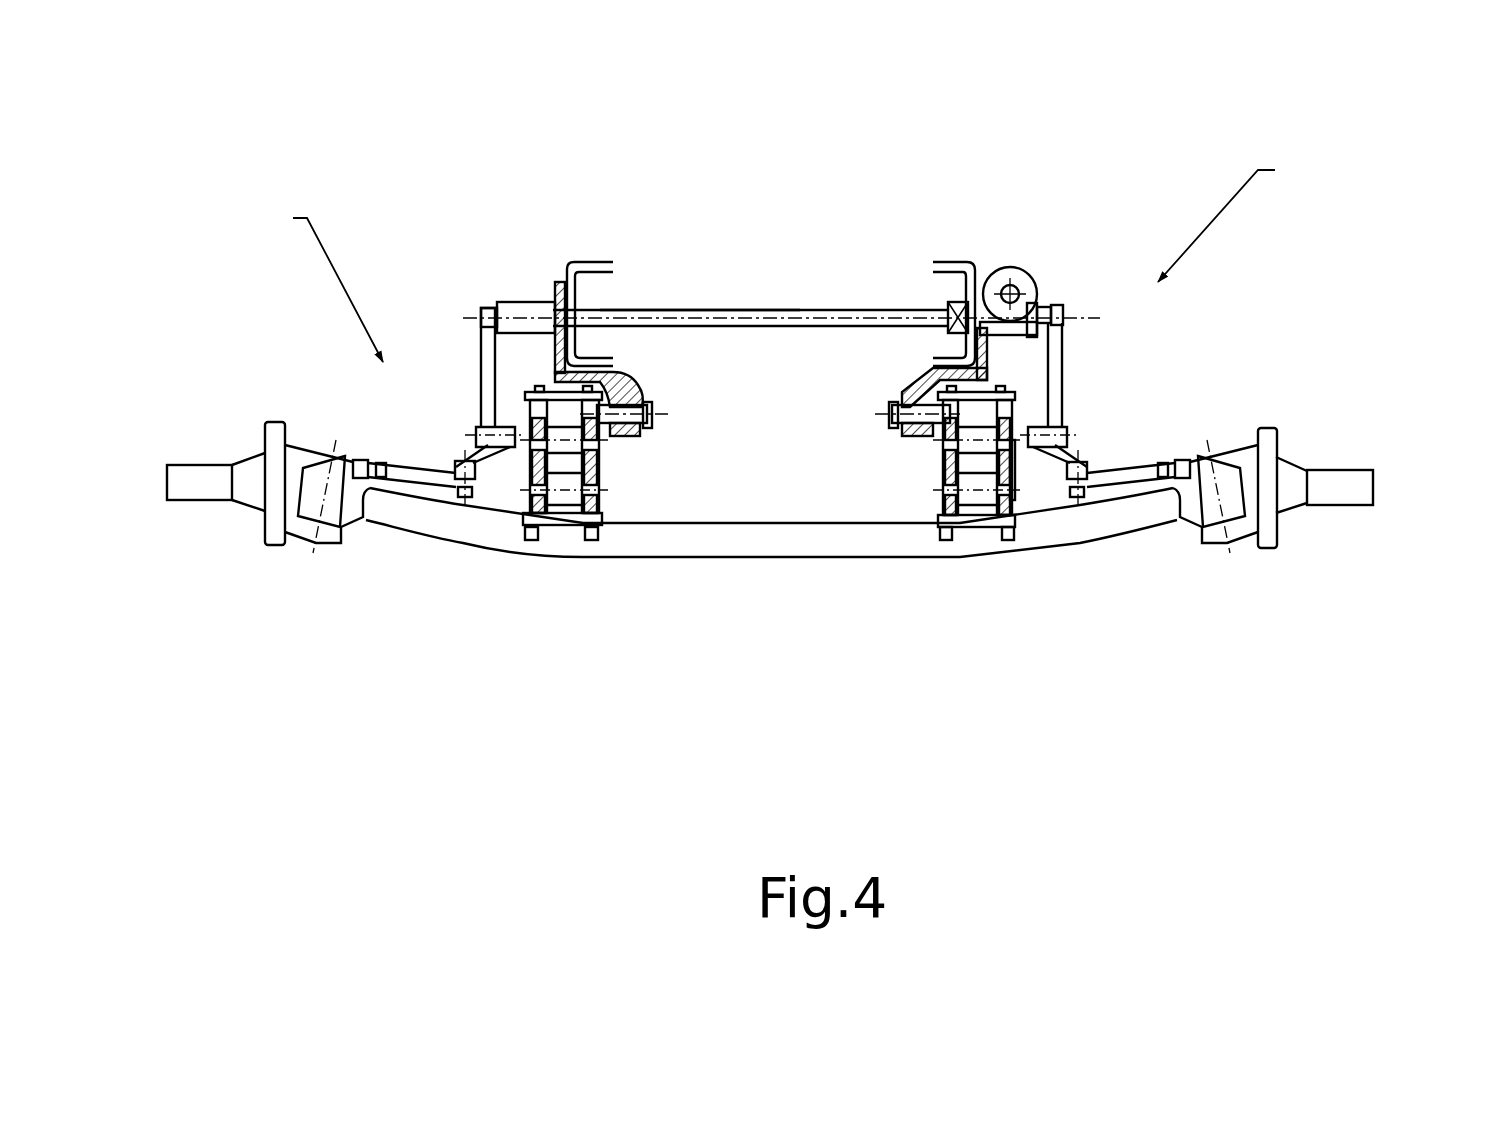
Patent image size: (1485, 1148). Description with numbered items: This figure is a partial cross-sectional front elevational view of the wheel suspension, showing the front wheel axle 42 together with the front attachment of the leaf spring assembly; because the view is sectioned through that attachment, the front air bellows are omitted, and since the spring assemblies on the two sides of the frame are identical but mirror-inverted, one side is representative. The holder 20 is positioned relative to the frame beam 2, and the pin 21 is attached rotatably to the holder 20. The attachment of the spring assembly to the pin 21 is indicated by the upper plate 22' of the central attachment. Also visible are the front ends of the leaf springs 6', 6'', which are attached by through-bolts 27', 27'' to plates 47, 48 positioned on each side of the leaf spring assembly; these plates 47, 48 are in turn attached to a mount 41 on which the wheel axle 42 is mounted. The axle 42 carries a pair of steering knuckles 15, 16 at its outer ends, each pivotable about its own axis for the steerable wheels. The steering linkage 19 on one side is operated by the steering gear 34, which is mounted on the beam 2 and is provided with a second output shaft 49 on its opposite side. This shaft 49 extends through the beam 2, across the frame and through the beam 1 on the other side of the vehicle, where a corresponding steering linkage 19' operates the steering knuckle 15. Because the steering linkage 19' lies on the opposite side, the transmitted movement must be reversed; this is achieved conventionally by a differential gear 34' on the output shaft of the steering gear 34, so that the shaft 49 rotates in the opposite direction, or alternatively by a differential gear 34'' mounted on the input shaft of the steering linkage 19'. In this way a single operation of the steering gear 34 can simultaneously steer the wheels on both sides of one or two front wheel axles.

The beam 1 is at (590, 264).
The beam 2 is at (972, 300).
The leaf spring 6' is at (1143, 302).
The leaf spring 6'' is at (1205, 358).
The steering knuckle 15 is at (218, 474).
The steering knuckle 16 is at (1318, 482).
The steering linkage 19 is at (1236, 217).
The steering linkage 19' is at (312, 282).
The holder 20 is at (915, 370).
The pin 21 is at (812, 310).
The upper plate 22' is at (1119, 250).
The through-bolt 27' is at (855, 551).
The through-bolt 27'' is at (1168, 630).
The steering gear 34 is at (1096, 207).
The differential gear 34' is at (938, 209).
The differential gear 34'' is at (469, 236).
The mount 41 is at (981, 528).
The front wheel axle 42 is at (742, 548).
The plate 47 is at (950, 540).
The plate 48 is at (1010, 515).
The second output shaft 49 is at (700, 312).